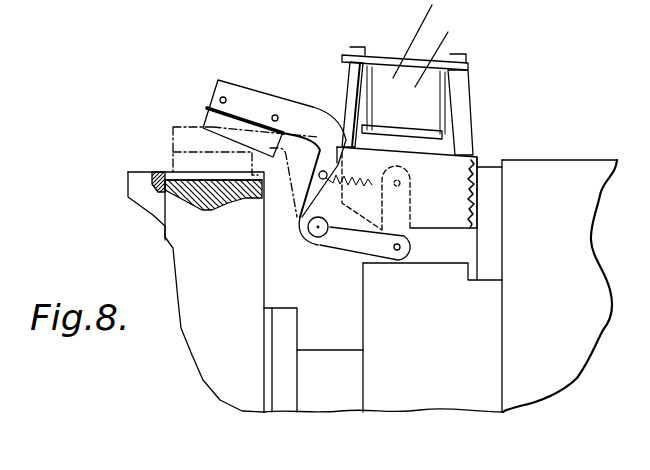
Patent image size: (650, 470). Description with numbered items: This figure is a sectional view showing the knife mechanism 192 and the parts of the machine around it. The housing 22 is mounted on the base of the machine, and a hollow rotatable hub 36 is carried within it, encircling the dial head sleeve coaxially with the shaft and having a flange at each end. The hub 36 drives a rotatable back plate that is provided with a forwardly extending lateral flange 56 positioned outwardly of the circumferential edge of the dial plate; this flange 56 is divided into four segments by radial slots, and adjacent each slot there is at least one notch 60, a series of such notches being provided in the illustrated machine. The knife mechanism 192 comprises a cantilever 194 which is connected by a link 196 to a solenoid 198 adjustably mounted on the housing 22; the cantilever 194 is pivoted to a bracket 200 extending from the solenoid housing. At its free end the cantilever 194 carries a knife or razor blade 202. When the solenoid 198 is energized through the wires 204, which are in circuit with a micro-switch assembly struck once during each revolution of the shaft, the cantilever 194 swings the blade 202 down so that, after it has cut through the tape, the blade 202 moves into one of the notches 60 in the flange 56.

The housing 22 is at (547, 172).
The hollow rotatable hub 36 is at (351, 407).
The forwardly extending lateral flange 56 is at (213, 373).
The notch 60 is at (173, 172).
The knife mechanism 192 is at (480, 107).
The cantilever 194 is at (355, 248).
The link 196 is at (408, 240).
The solenoid 198 is at (348, 88).
The bracket 200 is at (321, 245).
The knife or razor blade 202 is at (208, 110).
The wires 204 is at (448, 32).